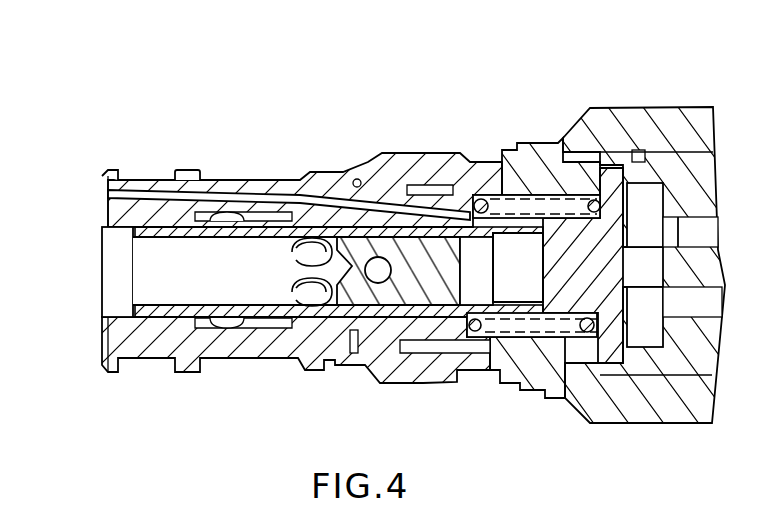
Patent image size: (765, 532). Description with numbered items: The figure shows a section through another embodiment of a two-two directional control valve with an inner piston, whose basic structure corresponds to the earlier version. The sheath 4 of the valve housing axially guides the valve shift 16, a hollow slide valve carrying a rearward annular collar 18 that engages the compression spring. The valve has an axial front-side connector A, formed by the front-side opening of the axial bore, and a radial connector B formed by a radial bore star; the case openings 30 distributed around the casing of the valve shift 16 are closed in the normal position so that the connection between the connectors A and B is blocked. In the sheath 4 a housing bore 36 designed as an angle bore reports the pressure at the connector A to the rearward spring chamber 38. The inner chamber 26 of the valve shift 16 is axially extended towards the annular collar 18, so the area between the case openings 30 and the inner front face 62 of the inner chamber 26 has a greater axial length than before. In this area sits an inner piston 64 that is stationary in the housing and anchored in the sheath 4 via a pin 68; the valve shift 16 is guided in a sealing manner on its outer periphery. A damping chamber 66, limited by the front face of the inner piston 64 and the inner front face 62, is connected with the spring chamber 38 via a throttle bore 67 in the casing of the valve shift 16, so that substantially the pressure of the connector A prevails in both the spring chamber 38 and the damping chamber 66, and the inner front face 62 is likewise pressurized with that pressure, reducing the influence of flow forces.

The sheath 4 is at (325, 178).
The valve shift 16 is at (578, 242).
The annular collar 18 is at (612, 150).
The inner chamber 26 is at (190, 271).
The case openings 30 is at (300, 300).
The housing bore 36 is at (144, 170).
The spring chamber 38 is at (543, 327).
The inner front face 62 is at (537, 170).
The inner piston 64 is at (428, 260).
The damping chamber 66 is at (477, 273).
The throttle bore 67 is at (498, 160).
The pin 68 is at (378, 272).
The connector A is at (115, 270).
The radial connector B is at (237, 180).